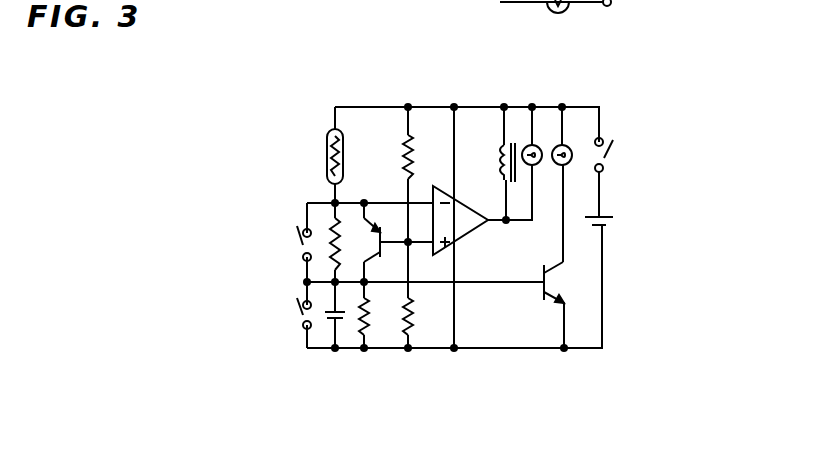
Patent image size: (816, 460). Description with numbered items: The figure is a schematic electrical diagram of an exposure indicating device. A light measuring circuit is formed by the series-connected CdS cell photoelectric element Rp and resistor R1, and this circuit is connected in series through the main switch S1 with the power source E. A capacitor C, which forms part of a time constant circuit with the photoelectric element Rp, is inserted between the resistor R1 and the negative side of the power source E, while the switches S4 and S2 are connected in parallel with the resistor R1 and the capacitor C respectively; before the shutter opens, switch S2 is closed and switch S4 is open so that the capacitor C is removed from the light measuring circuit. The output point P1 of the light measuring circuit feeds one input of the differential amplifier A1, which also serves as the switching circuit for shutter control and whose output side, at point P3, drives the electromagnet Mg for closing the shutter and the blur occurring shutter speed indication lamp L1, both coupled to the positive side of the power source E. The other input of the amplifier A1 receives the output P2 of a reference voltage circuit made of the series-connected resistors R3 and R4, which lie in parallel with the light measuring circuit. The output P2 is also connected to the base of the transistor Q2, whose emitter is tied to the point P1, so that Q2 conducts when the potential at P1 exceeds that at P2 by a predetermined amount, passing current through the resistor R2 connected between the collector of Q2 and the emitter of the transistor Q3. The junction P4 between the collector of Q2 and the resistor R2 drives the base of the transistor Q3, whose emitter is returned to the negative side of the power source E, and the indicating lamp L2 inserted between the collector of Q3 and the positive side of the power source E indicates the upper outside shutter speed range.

The photoelectric element Rp is at (326, 152).
The output point P1 is at (333, 200).
The resistor R1 is at (322, 238).
The switch S4 is at (298, 247).
The switch S2 is at (298, 310).
The capacitor C is at (323, 322).
The resistor R2 is at (358, 318).
The resistor R4 is at (414, 318).
The junction P4 is at (368, 284).
The output P2 is at (411, 246).
The connection point P3 is at (506, 224).
The transistor Q2 is at (381, 232).
The differential amplifier A1 is at (466, 205).
The resistor R3 is at (411, 138).
The electromagnet Mg is at (501, 150).
The blur occurring shutter speed indication lamp L1 is at (534, 143).
The indicating lamp L2 is at (565, 143).
The main switch S1 is at (606, 152).
The power source E is at (616, 222).
The transistor Q3 is at (568, 284).